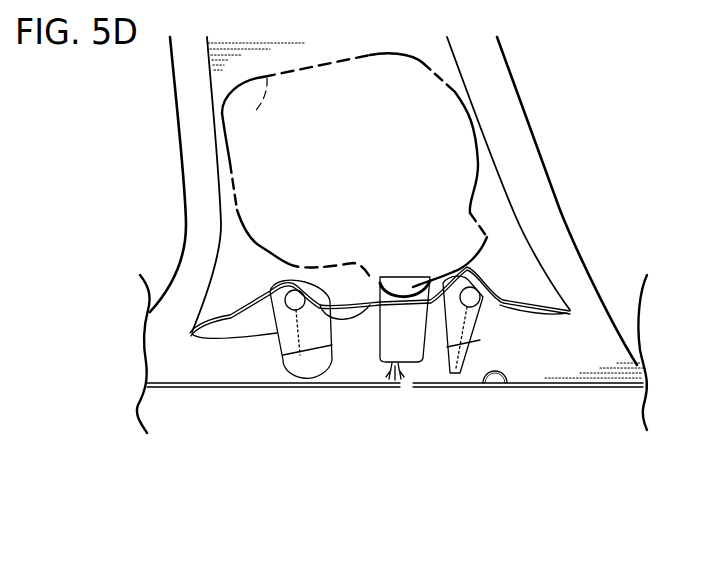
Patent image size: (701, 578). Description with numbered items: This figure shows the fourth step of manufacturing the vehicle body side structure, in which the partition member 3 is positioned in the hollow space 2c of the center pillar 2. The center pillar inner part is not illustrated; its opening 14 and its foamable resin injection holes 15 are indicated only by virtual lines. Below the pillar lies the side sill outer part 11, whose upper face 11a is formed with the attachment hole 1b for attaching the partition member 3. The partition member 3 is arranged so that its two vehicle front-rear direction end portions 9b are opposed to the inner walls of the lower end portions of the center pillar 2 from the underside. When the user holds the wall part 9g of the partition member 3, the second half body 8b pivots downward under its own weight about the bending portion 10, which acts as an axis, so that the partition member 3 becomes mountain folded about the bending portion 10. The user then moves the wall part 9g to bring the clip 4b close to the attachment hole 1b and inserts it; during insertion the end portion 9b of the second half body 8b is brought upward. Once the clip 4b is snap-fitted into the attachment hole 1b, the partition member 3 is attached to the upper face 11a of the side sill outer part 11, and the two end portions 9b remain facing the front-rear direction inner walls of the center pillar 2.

The center pillar 2 is at (540, 156).
The hollow space 2c is at (371, 167).
The opening 14 is at (253, 114).
The partition member 3 is at (230, 312).
The foamable resin injection holes 15 is at (277, 350).
The second half body 8b is at (277, 287).
The bending portion 10 is at (352, 265).
The wall part 9g is at (403, 290).
The clip 4b is at (393, 381).
The end portions 9b is at (202, 340).
The attachment hole 1b is at (407, 390).
The side sill outer part 11 is at (502, 388).
The upper face 11a is at (495, 378).